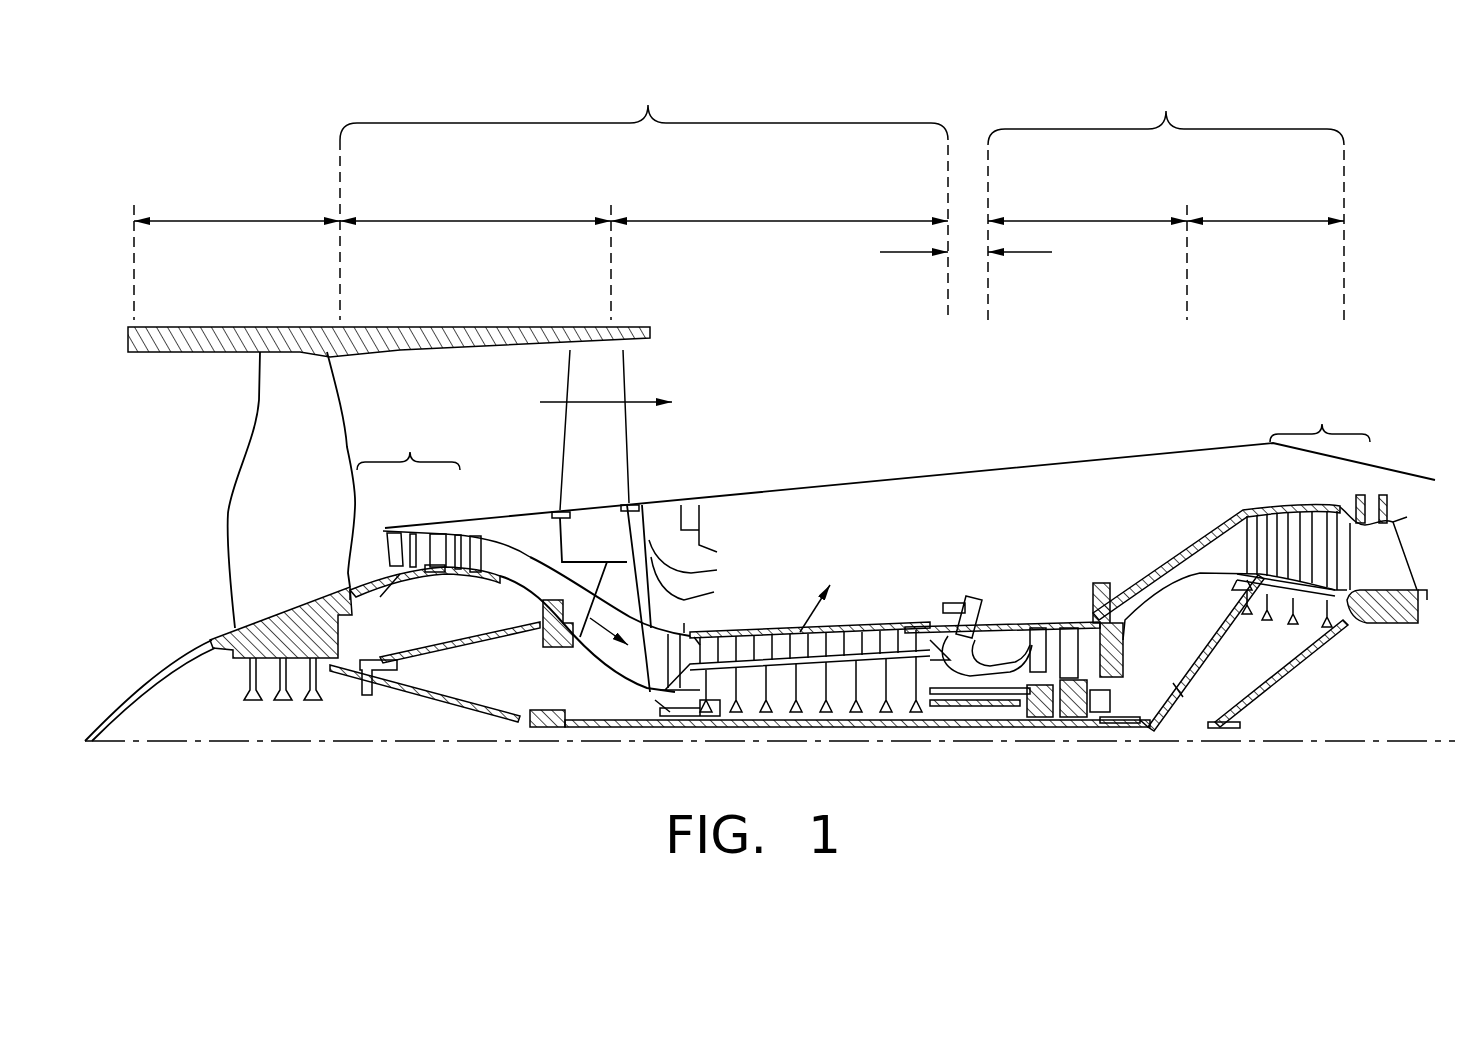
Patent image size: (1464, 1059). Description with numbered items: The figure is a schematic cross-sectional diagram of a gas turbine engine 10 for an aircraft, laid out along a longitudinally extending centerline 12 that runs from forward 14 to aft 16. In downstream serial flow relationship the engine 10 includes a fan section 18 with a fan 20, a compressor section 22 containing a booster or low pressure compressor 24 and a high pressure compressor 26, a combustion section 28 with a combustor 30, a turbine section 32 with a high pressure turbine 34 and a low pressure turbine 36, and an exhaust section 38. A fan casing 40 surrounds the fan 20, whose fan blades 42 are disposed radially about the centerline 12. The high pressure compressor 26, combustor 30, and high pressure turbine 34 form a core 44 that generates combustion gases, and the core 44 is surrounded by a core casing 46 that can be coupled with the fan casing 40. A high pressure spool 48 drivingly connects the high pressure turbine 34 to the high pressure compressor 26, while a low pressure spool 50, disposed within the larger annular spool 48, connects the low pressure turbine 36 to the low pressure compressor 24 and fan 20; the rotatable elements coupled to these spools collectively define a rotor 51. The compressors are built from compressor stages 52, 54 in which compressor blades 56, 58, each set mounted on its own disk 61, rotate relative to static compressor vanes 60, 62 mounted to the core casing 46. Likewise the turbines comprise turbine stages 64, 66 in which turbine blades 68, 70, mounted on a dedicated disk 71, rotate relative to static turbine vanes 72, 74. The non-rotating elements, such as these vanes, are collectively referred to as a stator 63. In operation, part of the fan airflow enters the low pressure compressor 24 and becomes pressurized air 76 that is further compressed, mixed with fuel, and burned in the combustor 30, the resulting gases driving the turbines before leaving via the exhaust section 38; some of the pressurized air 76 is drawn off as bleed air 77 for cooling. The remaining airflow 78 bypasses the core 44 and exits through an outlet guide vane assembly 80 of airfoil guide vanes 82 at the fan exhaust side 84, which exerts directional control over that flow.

The engine 10 is at (1357, 252).
The centerline 12 is at (215, 741).
The forward 14 is at (165, 466).
The aft 16 is at (1448, 557).
The fan section 18 is at (238, 221).
The fan 20 is at (213, 585).
The compressor section 22 is at (648, 105).
The low pressure compressor 24 is at (482, 221).
The high pressure compressor 26 is at (782, 221).
The combustion section 28 is at (882, 252).
The combustor 30 is at (988, 602).
The turbine section 32 is at (1166, 111).
The HP turbine 34 is at (1082, 221).
The LP turbine 36 is at (1265, 221).
The exhaust section 38 is at (1437, 487).
The fan casing 40 is at (375, 327).
The fan blades 42 is at (318, 393).
The core 44 is at (910, 505).
The core casing 46 is at (1178, 550).
The HP spool 48 is at (972, 730).
The LP spool 50 is at (540, 715).
The rotor 51 is at (1130, 683).
The compressor stages 52 is at (572, 605).
The compressor stages 54 is at (790, 575).
The compressor blades 56 is at (418, 540).
The compressor blades 58 is at (694, 637).
The static compressor vanes 60 is at (395, 540).
The disk 61 is at (435, 573).
The static compressor vanes 62 is at (684, 623).
The stator 63 is at (1243, 500).
The turbine stages 64 is at (1040, 600).
The turbine stages 66 is at (1322, 424).
The turbine blades 68 is at (1062, 628).
The turbine blades 70 is at (1332, 510).
The disk 71 is at (1247, 590).
The static turbine vanes 72 is at (1033, 626).
The static turbine vanes 74 is at (1310, 520).
The pressurized air 76 is at (580, 648).
The bleed air 77 is at (800, 610).
The airflow 78 is at (540, 402).
The outlet guide vane assembly 80 is at (640, 462).
The airfoil guide vanes 82 is at (570, 440).
The fan exhaust side 84 is at (645, 378).